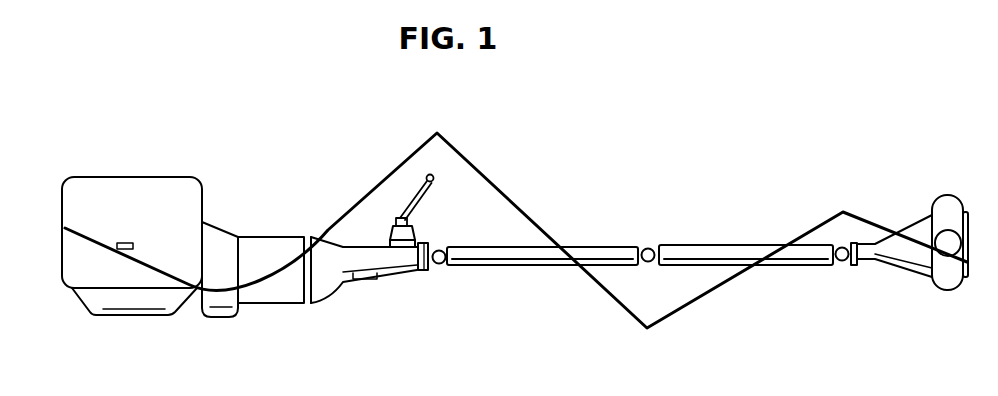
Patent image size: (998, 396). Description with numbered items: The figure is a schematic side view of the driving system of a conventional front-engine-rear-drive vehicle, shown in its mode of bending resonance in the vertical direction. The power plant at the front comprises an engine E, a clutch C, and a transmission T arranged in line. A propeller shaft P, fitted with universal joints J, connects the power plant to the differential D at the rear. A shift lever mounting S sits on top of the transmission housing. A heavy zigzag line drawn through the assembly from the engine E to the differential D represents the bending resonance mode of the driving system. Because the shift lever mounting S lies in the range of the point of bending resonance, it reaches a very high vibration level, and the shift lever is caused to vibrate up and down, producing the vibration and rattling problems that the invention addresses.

The engine E is at (130, 225).
The clutch C is at (210, 267).
The transmission T is at (257, 269).
The shift lever mounting S is at (413, 232).
The universal joints J is at (437, 268).
The propeller shaft P is at (515, 266).
The differential D is at (942, 279).